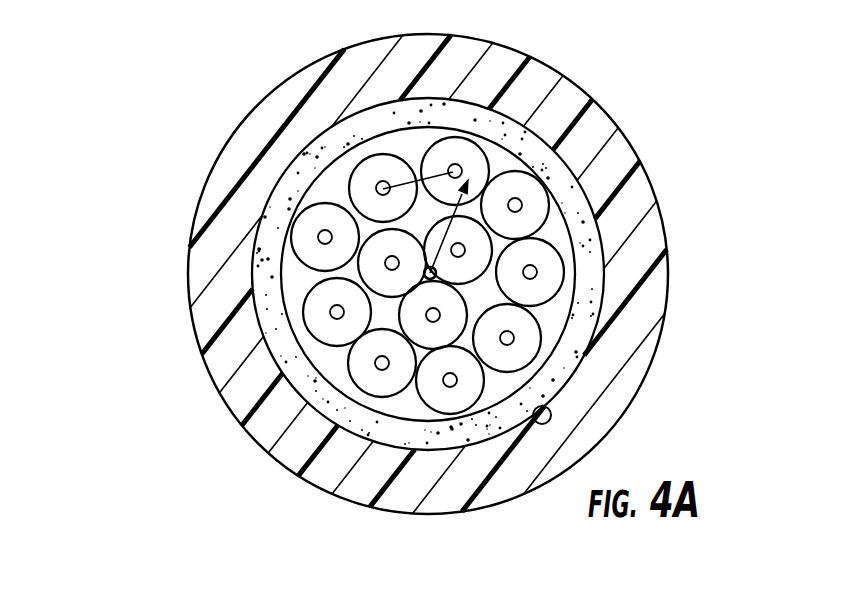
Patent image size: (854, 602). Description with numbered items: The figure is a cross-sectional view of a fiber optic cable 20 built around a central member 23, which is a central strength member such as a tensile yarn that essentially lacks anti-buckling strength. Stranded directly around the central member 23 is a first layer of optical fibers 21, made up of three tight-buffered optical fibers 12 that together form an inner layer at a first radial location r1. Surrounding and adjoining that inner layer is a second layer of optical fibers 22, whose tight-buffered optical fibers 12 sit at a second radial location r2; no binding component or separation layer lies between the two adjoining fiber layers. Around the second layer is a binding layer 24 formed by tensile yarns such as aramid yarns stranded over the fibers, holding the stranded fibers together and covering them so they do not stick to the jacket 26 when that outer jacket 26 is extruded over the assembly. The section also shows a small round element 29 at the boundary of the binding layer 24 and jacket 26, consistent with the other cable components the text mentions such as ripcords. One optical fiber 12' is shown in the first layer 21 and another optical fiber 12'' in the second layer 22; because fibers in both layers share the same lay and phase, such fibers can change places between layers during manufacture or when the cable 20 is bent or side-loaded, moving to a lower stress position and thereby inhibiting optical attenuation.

The fiber optic cable 20 is at (154, 60).
The jacket 26 is at (470, 67).
The binding layer 24 is at (497, 126).
The central member 23 is at (455, 263).
The tight-buffered optical fibers 12 is at (524, 267).
The optical fiber 12' is at (259, 282).
The optical fiber 12'' is at (223, 359).
The first layer of optical fibers 21 is at (435, 326).
The second layer of optical fibers 22 is at (483, 378).
The ripcord 29 is at (562, 412).
The first radial location r1 is at (383, 189).
The second radial location r2 is at (464, 183).